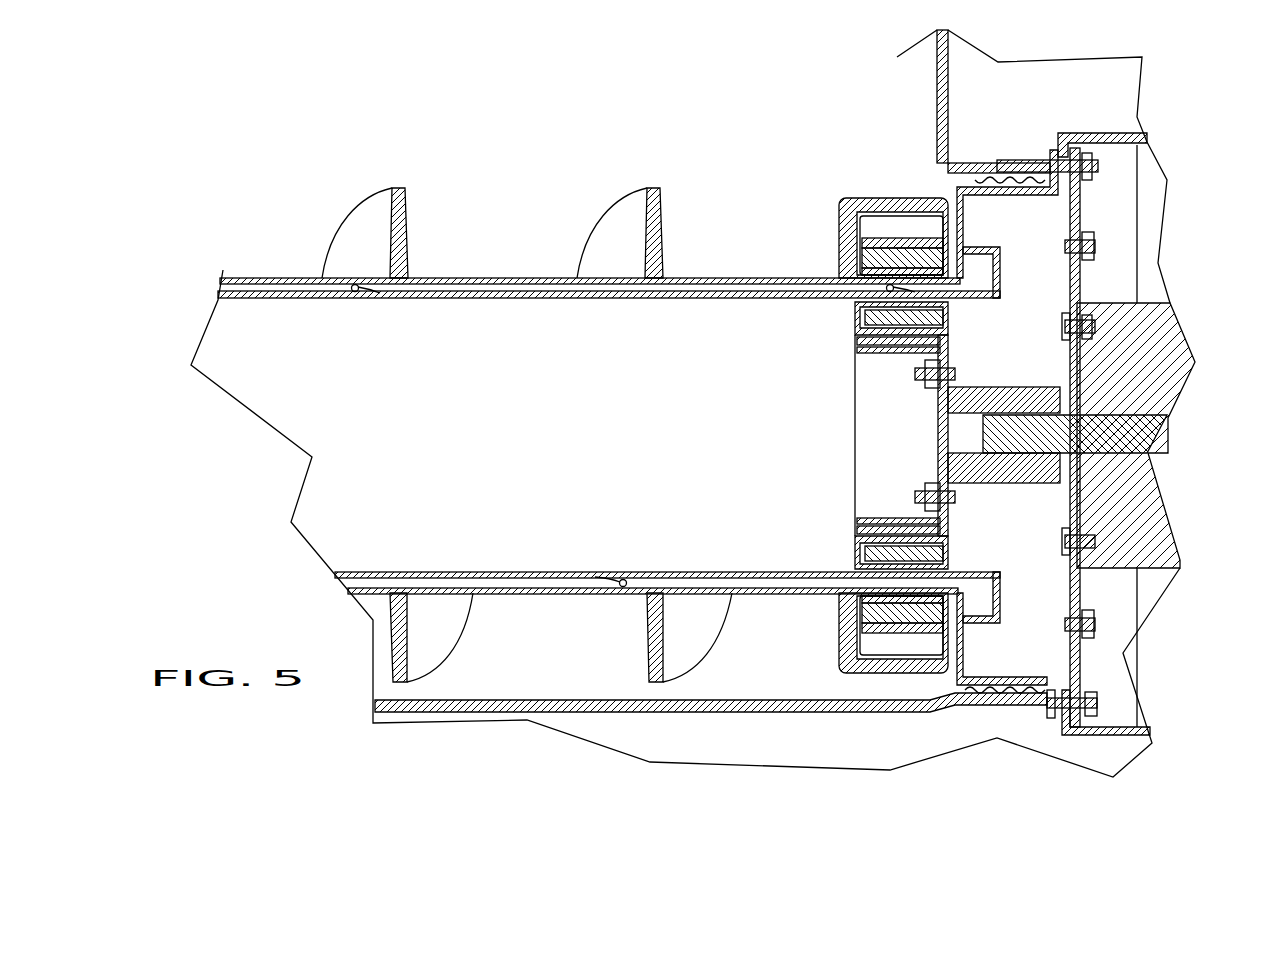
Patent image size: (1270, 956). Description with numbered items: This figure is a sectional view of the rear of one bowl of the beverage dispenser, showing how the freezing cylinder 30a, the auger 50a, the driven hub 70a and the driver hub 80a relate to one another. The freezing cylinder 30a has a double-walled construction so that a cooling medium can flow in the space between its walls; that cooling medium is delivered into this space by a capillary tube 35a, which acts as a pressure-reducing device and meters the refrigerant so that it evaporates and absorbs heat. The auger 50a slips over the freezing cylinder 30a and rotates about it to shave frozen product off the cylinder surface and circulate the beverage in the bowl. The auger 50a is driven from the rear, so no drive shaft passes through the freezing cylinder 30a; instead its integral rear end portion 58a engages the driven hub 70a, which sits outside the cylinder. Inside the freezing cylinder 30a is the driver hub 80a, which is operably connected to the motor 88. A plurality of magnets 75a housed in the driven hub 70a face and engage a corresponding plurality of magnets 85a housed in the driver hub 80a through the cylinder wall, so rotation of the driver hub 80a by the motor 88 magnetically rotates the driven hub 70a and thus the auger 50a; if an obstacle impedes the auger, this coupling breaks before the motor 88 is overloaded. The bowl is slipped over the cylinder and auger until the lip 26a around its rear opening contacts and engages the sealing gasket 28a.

The freezing cylinder 30a is at (268, 276).
The auger 50a is at (378, 207).
The capillary tube 35a is at (613, 585).
The rear end portion 58a is at (868, 200).
The driven hub 70a is at (860, 228).
The magnets 75a is at (863, 262).
The magnets 85a is at (863, 313).
The driver hub 80a is at (852, 333).
The motor 88 is at (1180, 330).
The lip 26a is at (980, 704).
The sealing gasket 28a is at (1028, 706).